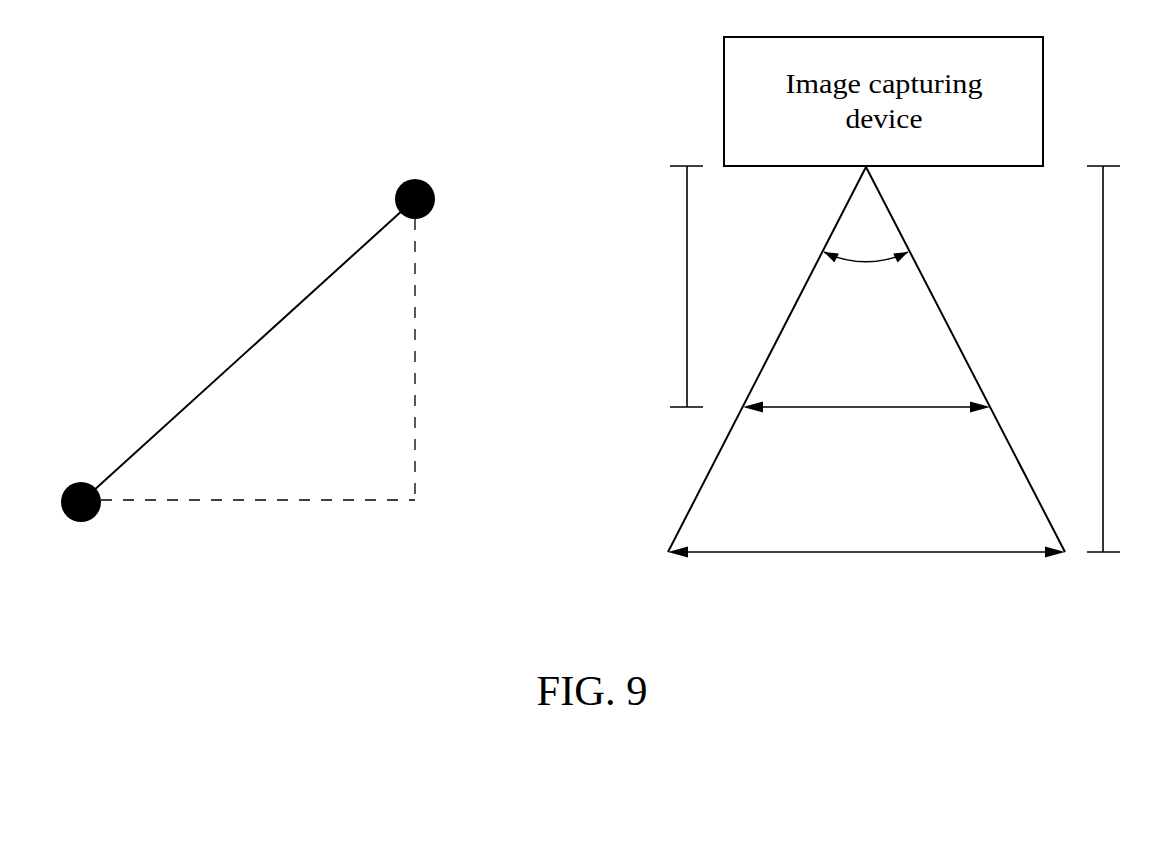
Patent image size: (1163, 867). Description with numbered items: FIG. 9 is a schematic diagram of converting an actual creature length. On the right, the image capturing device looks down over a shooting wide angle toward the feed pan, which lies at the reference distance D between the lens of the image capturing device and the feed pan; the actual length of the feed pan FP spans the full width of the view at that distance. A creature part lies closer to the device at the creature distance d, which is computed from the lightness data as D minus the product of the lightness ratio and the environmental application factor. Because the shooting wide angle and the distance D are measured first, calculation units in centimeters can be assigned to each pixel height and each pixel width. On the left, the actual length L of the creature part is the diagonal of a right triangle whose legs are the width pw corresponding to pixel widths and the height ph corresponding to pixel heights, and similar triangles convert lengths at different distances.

The actual length of the creature part L is at (525, 350).
The height corresponding to pixel heights of the creature part ph is at (441, 359).
The width corresponding to pixel widths of the creature part pw is at (258, 521).
The creature distance d is at (681, 286).
The reference distance D is at (1114, 359).
The actual length of the feed pan FP is at (866, 535).